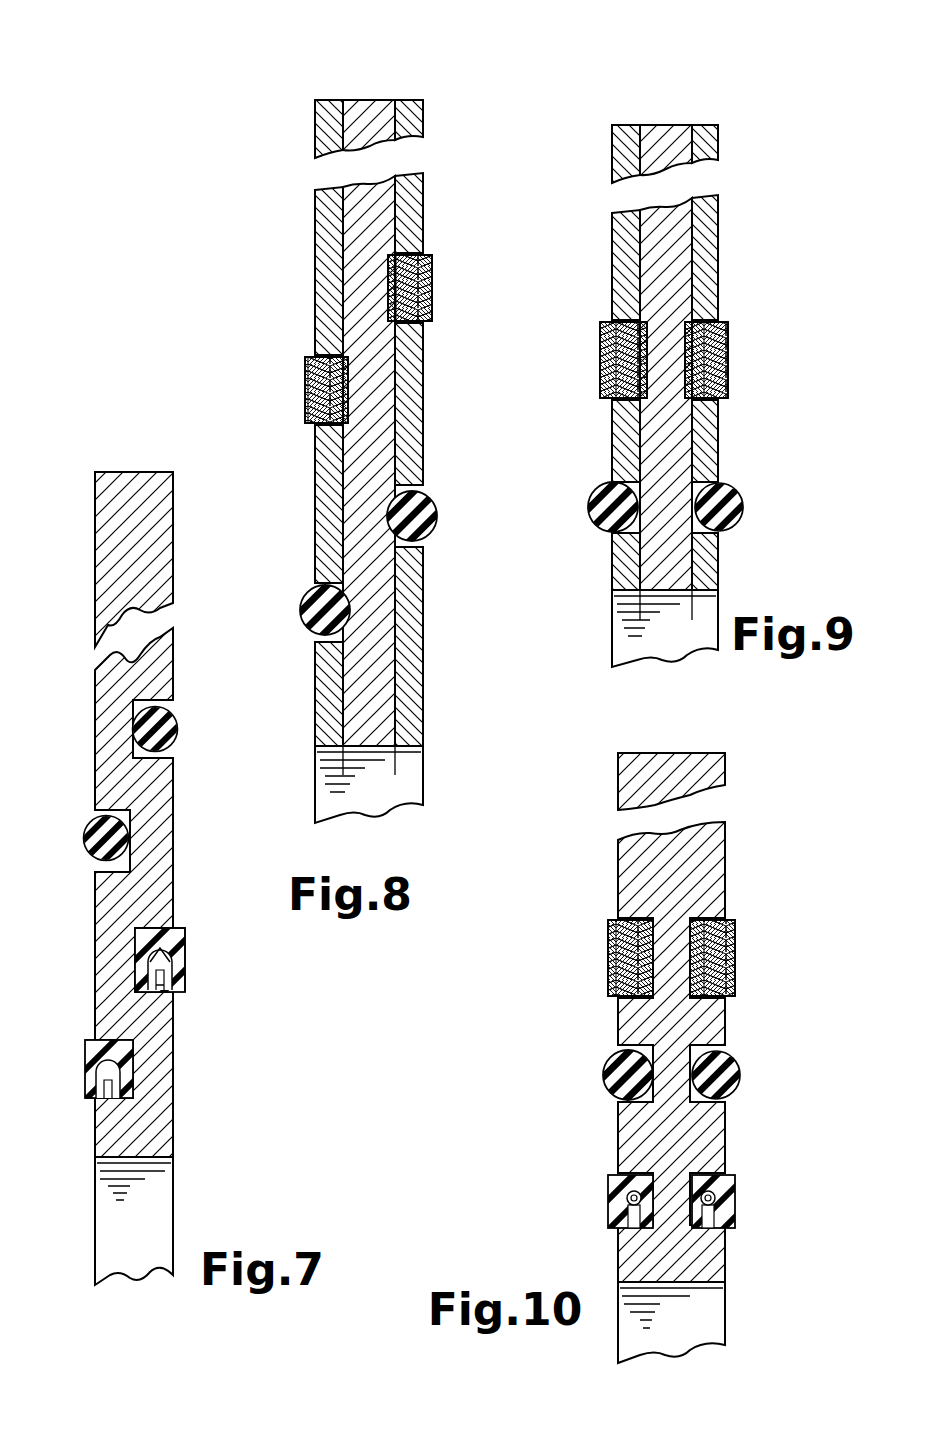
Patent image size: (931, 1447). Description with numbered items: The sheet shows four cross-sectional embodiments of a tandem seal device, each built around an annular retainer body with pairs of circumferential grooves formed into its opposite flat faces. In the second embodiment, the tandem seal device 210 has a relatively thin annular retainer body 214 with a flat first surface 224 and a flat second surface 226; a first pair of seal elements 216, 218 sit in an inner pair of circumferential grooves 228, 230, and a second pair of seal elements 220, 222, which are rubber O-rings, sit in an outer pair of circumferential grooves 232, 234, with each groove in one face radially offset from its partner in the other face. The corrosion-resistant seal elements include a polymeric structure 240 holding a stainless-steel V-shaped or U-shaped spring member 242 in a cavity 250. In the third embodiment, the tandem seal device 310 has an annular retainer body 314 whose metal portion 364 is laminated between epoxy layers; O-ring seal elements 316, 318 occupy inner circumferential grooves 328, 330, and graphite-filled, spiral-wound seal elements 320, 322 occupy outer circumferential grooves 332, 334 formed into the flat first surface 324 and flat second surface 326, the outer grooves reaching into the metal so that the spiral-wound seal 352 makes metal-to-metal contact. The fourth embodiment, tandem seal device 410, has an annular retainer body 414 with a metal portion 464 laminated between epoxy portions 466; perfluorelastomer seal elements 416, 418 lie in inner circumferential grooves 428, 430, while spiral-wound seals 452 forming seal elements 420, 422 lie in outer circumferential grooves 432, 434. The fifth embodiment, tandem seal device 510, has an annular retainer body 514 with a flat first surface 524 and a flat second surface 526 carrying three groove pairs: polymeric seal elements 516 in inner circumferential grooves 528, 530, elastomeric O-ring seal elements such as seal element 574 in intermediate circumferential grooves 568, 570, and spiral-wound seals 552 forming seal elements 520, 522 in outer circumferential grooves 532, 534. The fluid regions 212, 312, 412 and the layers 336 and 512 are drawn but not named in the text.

In FIG. 7, the tandem seal device 210 is at (121, 440).
In FIG. 7, the fluid 212 is at (122, 1236).
In FIG. 7, the annular retainer body 214 is at (150, 472).
In FIG. 7, the seal element 216 is at (90, 1047).
In FIG. 7, the seal element 218 is at (186, 951).
In FIG. 7, the seal element 220 is at (100, 836).
In FIG. 7, the seal element 222 is at (168, 728).
In FIG. 7, the flat first surface 224 is at (95, 712).
In FIG. 7, the flat second surface 226 is at (176, 819).
In FIG. 7, the inner circumferential groove 228 is at (100, 1097).
In FIG. 7, the inner circumferential groove 230 is at (152, 990).
In FIG. 7, the outer circumferential groove 232 is at (105, 870).
In FIG. 7, the outer circumferential groove 234 is at (165, 762).
In FIG. 7, the polymeric structure 240 is at (185, 976).
In FIG. 7, the spring member 242 is at (170, 932).
In FIG. 7, the cavity 250 is at (160, 990).
In FIG. 8, the tandem seal device 310 is at (370, 70).
In FIG. 8, the fluid 312 is at (369, 804).
In FIG. 8, the annular retainer body 314 is at (400, 90).
In FIG. 8, the seal element 316 is at (310, 628).
In FIG. 8, the seal element 318 is at (438, 525).
In FIG. 8, the seal element 320 is at (305, 390).
In FIG. 8, the seal element 322 is at (432, 297).
In FIG. 8, the flat first surface 324 is at (315, 258).
In FIG. 8, the flat second surface 326 is at (425, 213).
In FIG. 8, the inner circumferential groove 328 is at (345, 632).
In FIG. 8, the inner circumferential groove 330 is at (395, 497).
In FIG. 8, the outer circumferential groove 332 is at (325, 418).
In FIG. 8, the outer circumferential groove 334 is at (410, 318).
In FIG. 8, the outer layer 336 is at (328, 100).
In FIG. 8, the graphite-filled, spiral-wound seal 352 is at (432, 282).
In FIG. 8, the metal portion 364 is at (368, 100).
In FIG. 9, the tandem seal device 410 is at (667, 75).
In FIG. 9, the fluid 412 is at (672, 649).
In FIG. 9, the annular retainer body 414 is at (694, 108).
In FIG. 9, the seal element 416 is at (592, 495).
In FIG. 9, the seal element 418 is at (742, 495).
In FIG. 9, the seal element 420 is at (603, 370).
In FIG. 9, the seal element 422 is at (727, 364).
In FIG. 9, the inner circumferential groove 428 is at (612, 535).
In FIG. 9, the inner circumferential groove 430 is at (722, 535).
In FIG. 9, the outer circumferential groove 432 is at (610, 325).
In FIG. 9, the outer circumferential groove 434 is at (718, 402).
In FIG. 9, the graphite-filled, spiral-wound seal 452 is at (603, 348).
In FIG. 9, the metal portion 464 is at (660, 123).
In FIG. 9, the epoxy portion 466 is at (622, 125).
In FIG. 10, the tandem seal device 510 is at (664, 738).
In FIG. 10, the O-ring 512 is at (608, 1078).
In FIG. 10, the annular retainer body 514 is at (610, 1190).
In FIG. 10, the seal element 516 is at (736, 1195).
In FIG. 10, the seal element 520 is at (607, 940).
In FIG. 10, the seal element 522 is at (735, 933).
In FIG. 10, the flat first surface 524 is at (617, 873).
In FIG. 10, the flat second surface 526 is at (727, 858).
In FIG. 10, the inner circumferential groove 528 is at (625, 1228).
In FIG. 10, the inner circumferential groove 530 is at (730, 1230).
In FIG. 10, the outer circumferential groove 532 is at (630, 993).
In FIG. 10, the outer circumferential groove 534 is at (723, 998).
In FIG. 10, the graphite-filled, spiral-wound seal 552 is at (607, 968).
In FIG. 10, the intermediate circumferential groove 568 is at (618, 1050).
In FIG. 10, the intermediate circumferential groove 570 is at (727, 1050).
In FIG. 10, the seal element 574 is at (738, 1080).